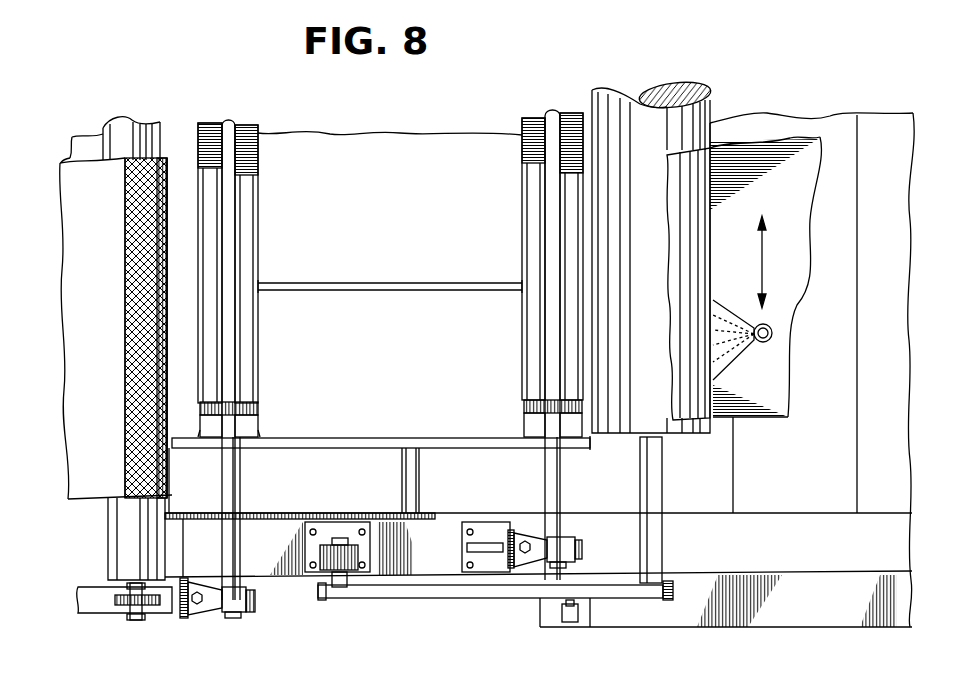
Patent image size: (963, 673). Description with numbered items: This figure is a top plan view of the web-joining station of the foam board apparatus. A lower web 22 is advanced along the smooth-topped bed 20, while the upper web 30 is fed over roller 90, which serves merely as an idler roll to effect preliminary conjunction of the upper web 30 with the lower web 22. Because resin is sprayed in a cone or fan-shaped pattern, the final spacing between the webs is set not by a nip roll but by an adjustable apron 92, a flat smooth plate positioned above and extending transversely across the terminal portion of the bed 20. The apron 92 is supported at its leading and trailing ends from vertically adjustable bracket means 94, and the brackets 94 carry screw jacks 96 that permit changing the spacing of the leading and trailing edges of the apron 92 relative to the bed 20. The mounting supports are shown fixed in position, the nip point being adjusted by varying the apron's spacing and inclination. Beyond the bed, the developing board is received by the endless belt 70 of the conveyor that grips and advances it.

The bed 20 is at (838, 331).
The lower web 22 is at (787, 226).
The upper web 30 is at (680, 182).
The endless belt 70 is at (103, 343).
The roller 90 is at (661, 369).
The adjustable apron 92 is at (406, 204).
The bracket means 94 is at (245, 610).
The screw jack 96 is at (195, 583).